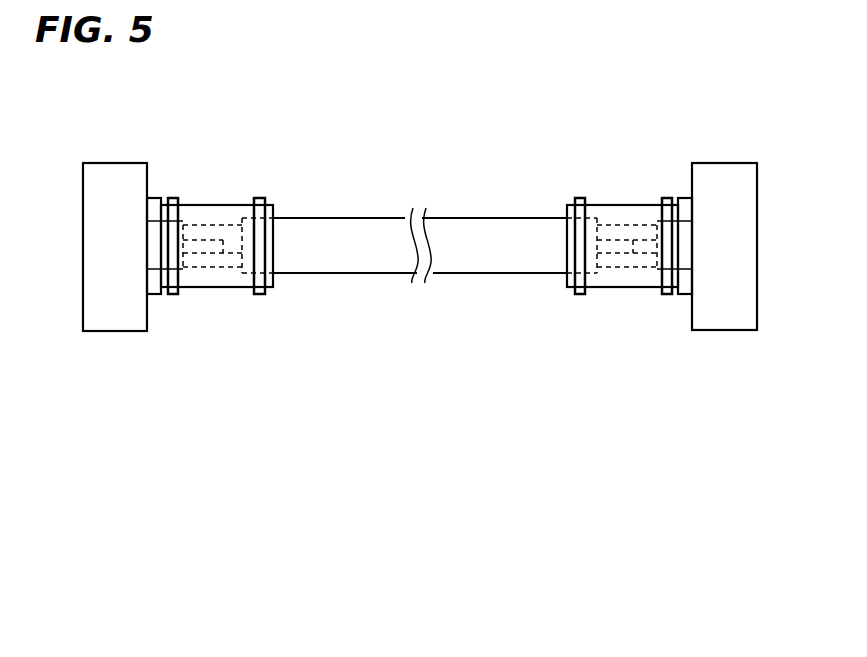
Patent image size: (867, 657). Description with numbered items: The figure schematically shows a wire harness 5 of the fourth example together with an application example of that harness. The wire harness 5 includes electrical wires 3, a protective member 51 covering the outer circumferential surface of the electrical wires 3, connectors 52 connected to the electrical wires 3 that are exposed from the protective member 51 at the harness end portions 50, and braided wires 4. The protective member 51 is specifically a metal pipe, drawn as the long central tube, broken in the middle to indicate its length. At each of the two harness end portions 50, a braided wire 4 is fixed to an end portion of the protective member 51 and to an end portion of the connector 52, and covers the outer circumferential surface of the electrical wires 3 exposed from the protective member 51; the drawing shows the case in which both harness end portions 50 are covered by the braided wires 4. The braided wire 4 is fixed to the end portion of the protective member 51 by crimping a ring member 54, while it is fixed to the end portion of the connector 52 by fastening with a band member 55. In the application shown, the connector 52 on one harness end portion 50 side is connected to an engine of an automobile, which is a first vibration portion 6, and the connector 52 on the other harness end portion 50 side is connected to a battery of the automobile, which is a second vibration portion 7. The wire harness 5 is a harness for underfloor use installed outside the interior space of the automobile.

The electrical wires 3 is at (222, 253).
The braided wires 4 is at (217, 203).
The wire harness 5 is at (456, 195).
The first vibration portion 6 is at (720, 305).
The second vibration portion 7 is at (120, 307).
The harness end portions 50 is at (419, 283).
The protective member 51 is at (383, 262).
The connectors 52 is at (155, 293).
The ring member 54 is at (267, 290).
The band member 55 is at (173, 293).